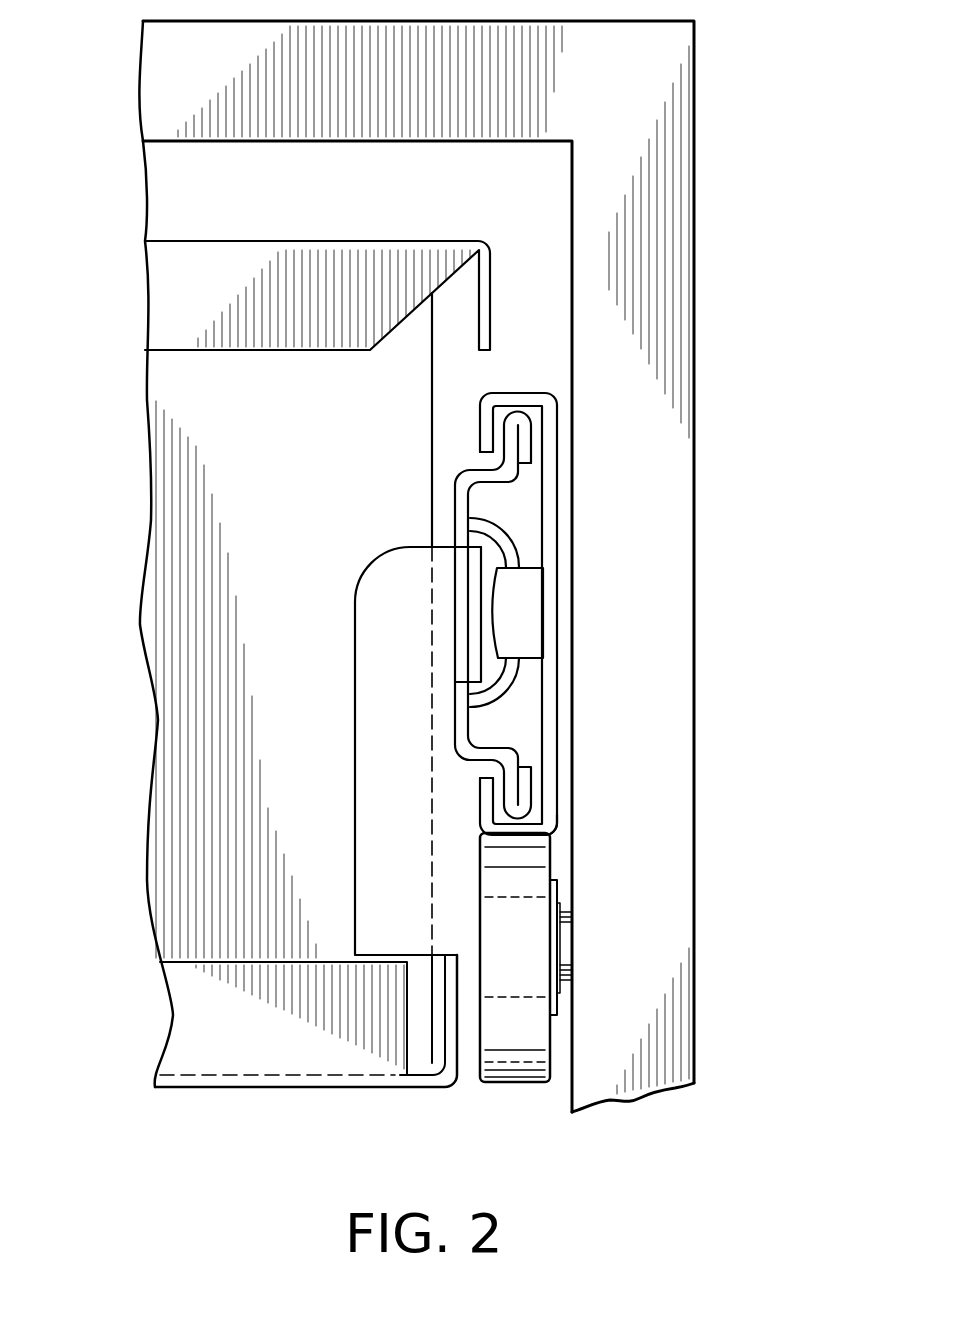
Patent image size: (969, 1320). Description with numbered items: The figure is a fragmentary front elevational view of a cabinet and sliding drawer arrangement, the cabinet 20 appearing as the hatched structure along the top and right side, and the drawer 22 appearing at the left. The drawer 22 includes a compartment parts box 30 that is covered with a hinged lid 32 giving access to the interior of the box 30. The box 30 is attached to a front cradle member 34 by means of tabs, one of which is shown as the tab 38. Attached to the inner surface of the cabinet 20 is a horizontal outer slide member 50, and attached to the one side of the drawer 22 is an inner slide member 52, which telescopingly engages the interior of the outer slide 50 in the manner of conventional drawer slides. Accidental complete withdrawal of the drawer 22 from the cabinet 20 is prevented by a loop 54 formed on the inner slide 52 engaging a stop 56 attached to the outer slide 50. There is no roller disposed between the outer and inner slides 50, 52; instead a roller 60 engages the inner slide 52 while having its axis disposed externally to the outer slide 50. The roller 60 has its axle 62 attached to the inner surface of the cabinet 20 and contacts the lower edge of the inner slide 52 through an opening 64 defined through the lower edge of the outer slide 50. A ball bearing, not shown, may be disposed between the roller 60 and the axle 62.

The cabinet 20 is at (725, 353).
The drawer 22 is at (136, 694).
The compartment parts box 30 is at (268, 510).
The hinged lid 32 is at (307, 258).
The front cradle member 34 is at (293, 1048).
The tab 38 is at (470, 568).
The outer slide member 50 is at (548, 432).
The inner slide member 52 is at (462, 497).
The loop 54 is at (503, 688).
The stop 56 is at (528, 612).
The roller 60 is at (515, 1063).
The axle 62 is at (567, 943).
The opening 64 is at (551, 831).